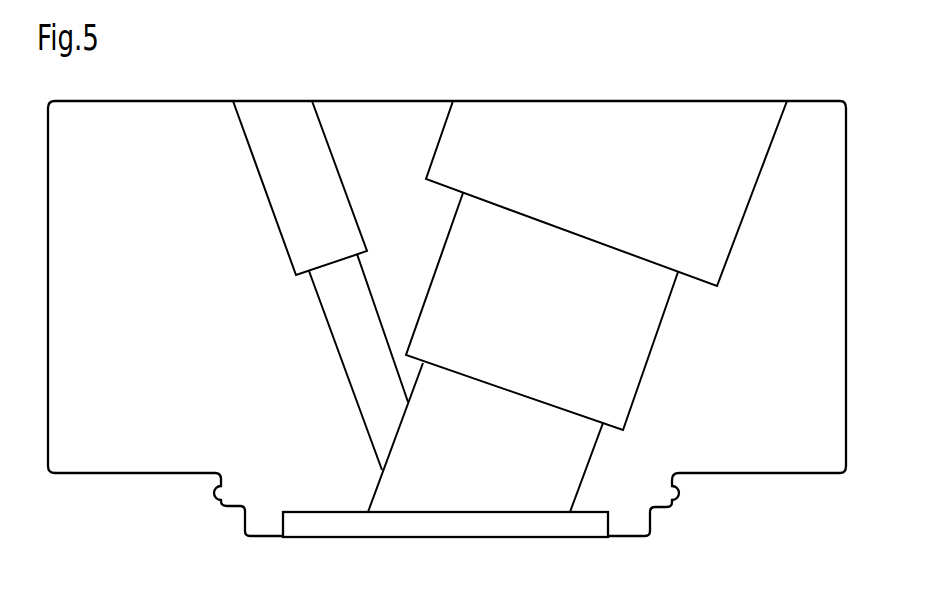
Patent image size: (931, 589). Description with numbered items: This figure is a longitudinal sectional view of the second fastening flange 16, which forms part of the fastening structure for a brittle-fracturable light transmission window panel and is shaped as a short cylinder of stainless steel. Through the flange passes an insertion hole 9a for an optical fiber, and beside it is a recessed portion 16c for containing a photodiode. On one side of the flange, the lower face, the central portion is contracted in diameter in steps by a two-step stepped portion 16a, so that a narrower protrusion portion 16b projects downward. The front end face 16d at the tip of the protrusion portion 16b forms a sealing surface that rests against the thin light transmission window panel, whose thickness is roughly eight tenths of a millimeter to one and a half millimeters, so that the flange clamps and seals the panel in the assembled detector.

The second fastening flange 16 is at (403, 98).
The insertion hole for an optical fiber 9a is at (340, 292).
The recessed portion for containing photodiode 16c is at (633, 377).
The two-step stepped portion 16a is at (222, 505).
The protrusion portion 16b is at (258, 520).
The front end face 16d is at (265, 538).